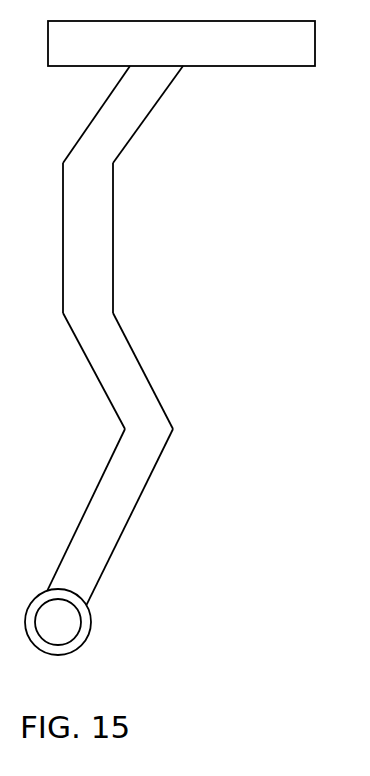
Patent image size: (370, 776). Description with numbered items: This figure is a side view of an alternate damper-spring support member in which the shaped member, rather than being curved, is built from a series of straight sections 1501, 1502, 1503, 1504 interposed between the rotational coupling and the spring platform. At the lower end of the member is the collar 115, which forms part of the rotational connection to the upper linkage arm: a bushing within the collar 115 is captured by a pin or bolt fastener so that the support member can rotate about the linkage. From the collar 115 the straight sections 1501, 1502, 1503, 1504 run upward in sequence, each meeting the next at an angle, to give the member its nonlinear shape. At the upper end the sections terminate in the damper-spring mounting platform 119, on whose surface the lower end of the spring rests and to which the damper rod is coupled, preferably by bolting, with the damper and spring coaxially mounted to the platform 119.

The damper-spring mounting platform 119 is at (151, 56).
The straight section 1504 is at (122, 118).
The straight section 1503 is at (80, 237).
The straight section 1502 is at (110, 341).
The straight section 1501 is at (110, 518).
The collar 115 is at (85, 630).